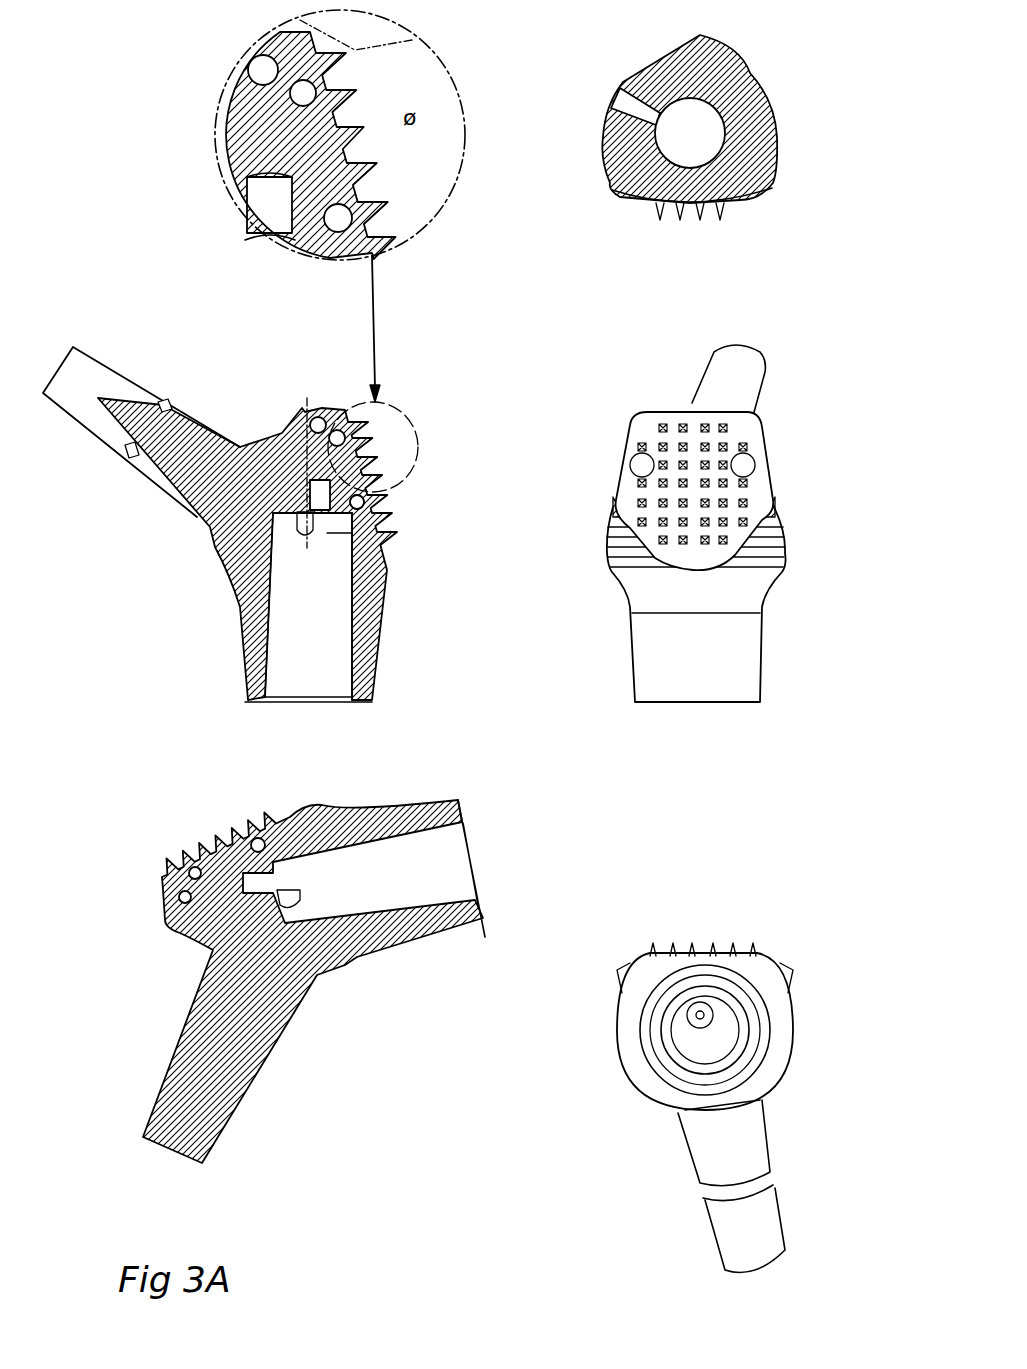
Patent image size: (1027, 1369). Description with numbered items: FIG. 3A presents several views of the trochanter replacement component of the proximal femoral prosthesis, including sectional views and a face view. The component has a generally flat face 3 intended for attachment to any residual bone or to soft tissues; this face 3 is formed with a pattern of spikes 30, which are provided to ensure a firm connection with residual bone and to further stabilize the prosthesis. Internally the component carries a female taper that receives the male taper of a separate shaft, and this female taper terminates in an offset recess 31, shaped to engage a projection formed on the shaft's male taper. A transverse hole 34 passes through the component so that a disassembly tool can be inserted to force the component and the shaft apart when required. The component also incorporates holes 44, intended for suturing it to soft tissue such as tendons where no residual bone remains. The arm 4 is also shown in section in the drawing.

The flat face 3 is at (387, 552).
The arm 4 is at (272, 608).
The spikes 30 is at (352, 420).
The offset recess 31 is at (300, 495).
The transverse hole 34 is at (273, 528).
The holes 44 is at (360, 497).